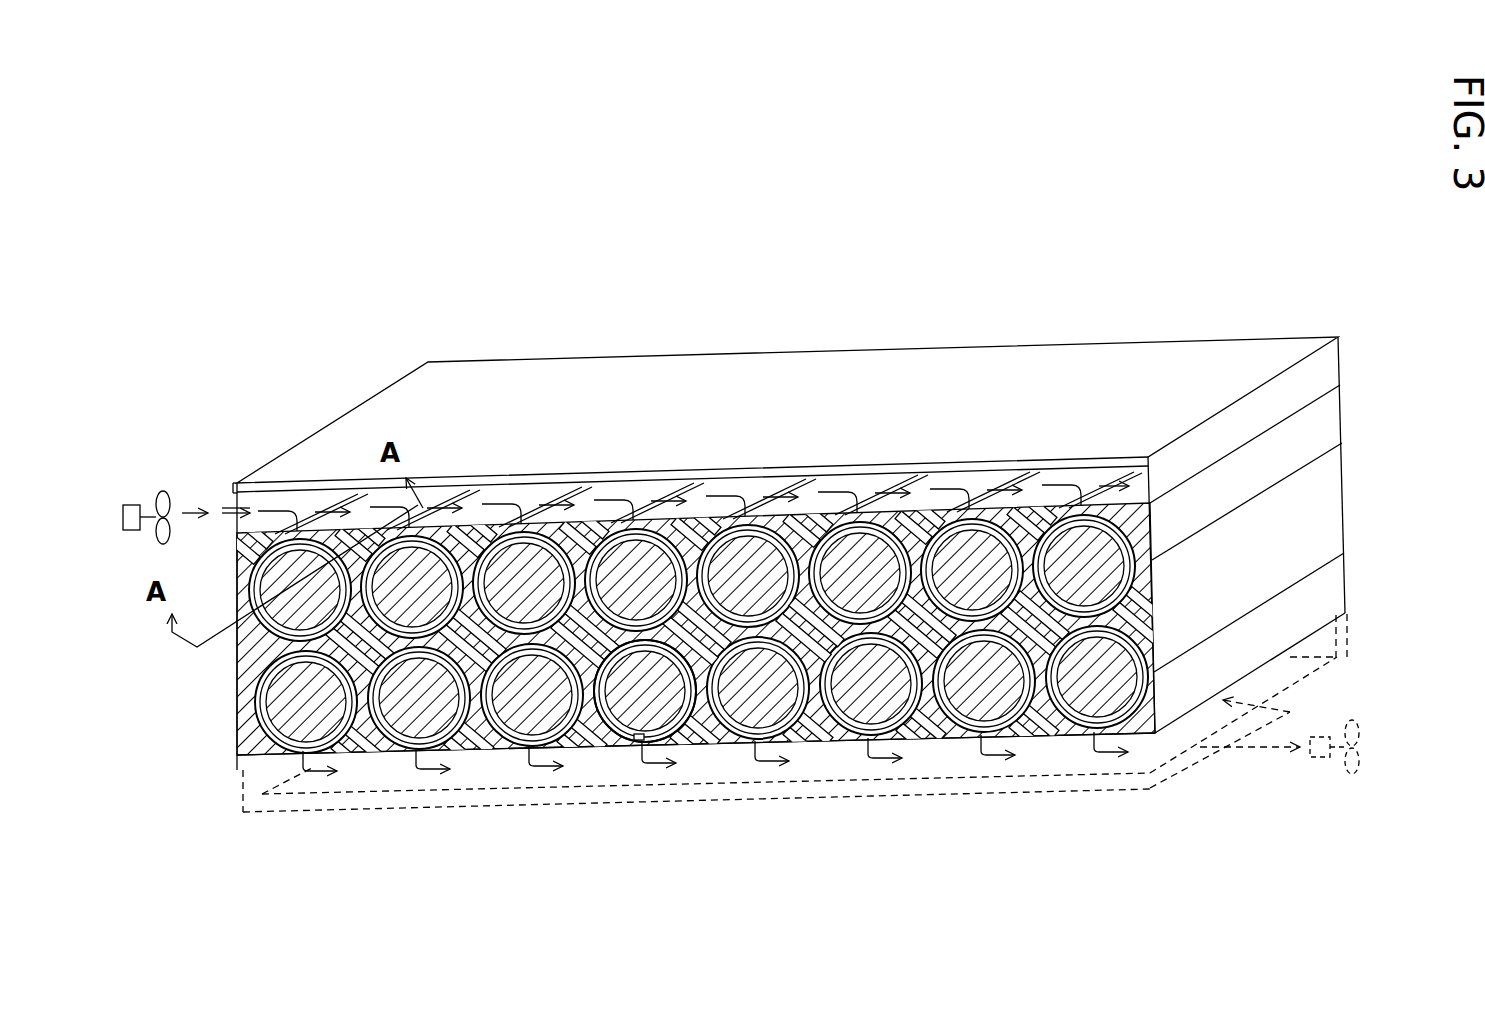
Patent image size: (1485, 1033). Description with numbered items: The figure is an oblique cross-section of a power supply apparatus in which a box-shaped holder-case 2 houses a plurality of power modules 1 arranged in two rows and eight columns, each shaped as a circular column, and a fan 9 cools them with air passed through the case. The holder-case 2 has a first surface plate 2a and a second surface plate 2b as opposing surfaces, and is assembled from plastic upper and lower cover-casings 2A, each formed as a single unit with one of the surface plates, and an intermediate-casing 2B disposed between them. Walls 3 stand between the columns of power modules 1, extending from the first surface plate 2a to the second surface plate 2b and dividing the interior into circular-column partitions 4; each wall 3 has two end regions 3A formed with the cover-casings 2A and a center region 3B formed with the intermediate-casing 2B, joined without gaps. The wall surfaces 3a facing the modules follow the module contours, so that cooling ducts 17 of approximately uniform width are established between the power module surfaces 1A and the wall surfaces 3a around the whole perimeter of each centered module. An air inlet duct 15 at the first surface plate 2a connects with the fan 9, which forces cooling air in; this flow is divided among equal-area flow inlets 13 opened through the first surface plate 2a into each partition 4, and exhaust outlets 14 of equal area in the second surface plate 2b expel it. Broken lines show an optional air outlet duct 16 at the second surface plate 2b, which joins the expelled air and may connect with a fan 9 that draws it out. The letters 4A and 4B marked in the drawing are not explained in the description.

The power module 1 is at (680, 545).
The power module surface 1A is at (695, 705).
The holder-case 2 is at (1408, 531).
The cover-casing 2A is at (1330, 422).
The intermediate-casing 2B is at (1328, 490).
The first surface plate 2a is at (488, 506).
The second surface plate 2b is at (495, 757).
The wall 3 is at (720, 407).
The end region 3A is at (698, 545).
The center region 3B is at (782, 540).
The wall surface 3a is at (638, 725).
The partition 4 is at (556, 461).
The elastic sheet 4A is at (613, 530).
The elastic sheet 4B is at (595, 530).
The fan 9 is at (139, 482).
The flow inlet 13 is at (617, 535).
The exhaust outlet 14 is at (647, 750).
The air inlet duct 15 is at (234, 500).
The air outlet duct 16 is at (1290, 712).
The cooling duct 17 is at (597, 535).